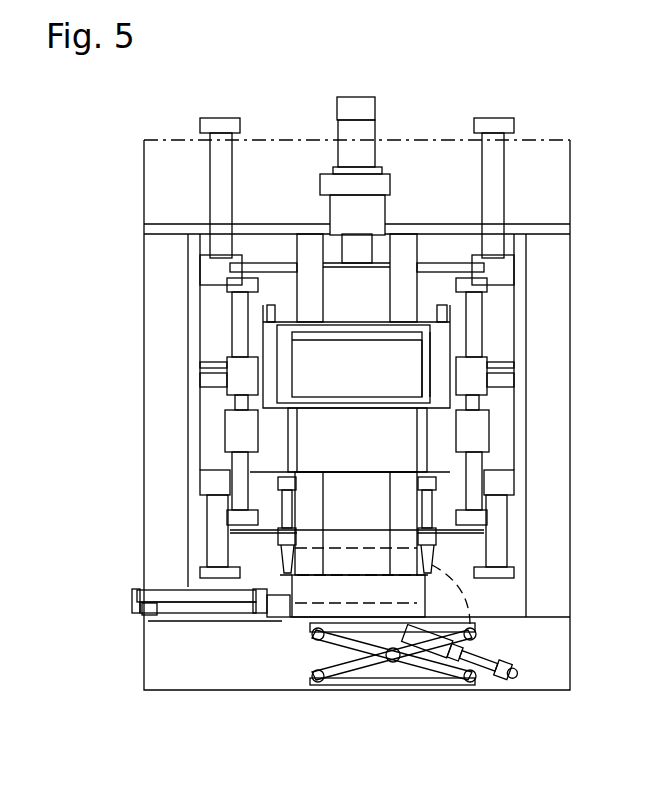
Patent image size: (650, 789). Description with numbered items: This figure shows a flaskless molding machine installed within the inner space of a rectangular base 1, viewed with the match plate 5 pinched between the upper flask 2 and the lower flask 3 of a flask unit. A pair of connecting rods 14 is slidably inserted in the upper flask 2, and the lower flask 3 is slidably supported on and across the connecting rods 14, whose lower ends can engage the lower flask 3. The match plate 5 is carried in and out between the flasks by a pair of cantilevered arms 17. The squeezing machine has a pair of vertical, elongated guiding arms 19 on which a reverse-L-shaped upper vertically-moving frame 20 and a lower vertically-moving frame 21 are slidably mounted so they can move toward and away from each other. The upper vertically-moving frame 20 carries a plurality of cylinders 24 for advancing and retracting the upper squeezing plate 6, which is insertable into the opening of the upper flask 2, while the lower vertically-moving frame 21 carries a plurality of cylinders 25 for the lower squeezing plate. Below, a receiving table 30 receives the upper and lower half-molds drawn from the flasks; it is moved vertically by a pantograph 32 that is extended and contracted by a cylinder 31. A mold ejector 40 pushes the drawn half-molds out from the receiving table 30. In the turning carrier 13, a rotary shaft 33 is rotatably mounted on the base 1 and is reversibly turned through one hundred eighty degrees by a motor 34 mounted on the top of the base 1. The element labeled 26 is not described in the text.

The base 1 is at (152, 410).
The upper flask 2 is at (317, 372).
The lower flask 3 is at (307, 443).
The match plate 5 is at (333, 400).
The upper squeezing plate 6 is at (355, 335).
The turning carrier 13 is at (403, 89).
The connecting rods 14 is at (240, 326).
The cantilevered arms 17 is at (443, 355).
The guiding arms 19 is at (222, 188).
The upper vertically-moving frame 20 is at (502, 289).
The lower vertically-moving frame 21 is at (500, 452).
The cylinders 24 is at (402, 258).
The cylinders 25 is at (404, 482).
The lower block 26 is at (422, 512).
The receiving table 30 is at (323, 632).
The cylinder 31 is at (474, 660).
The pantograph 32 is at (378, 668).
The rotary shaft 33 is at (362, 250).
The motor 34 is at (345, 163).
The mold ejector 40 is at (200, 637).